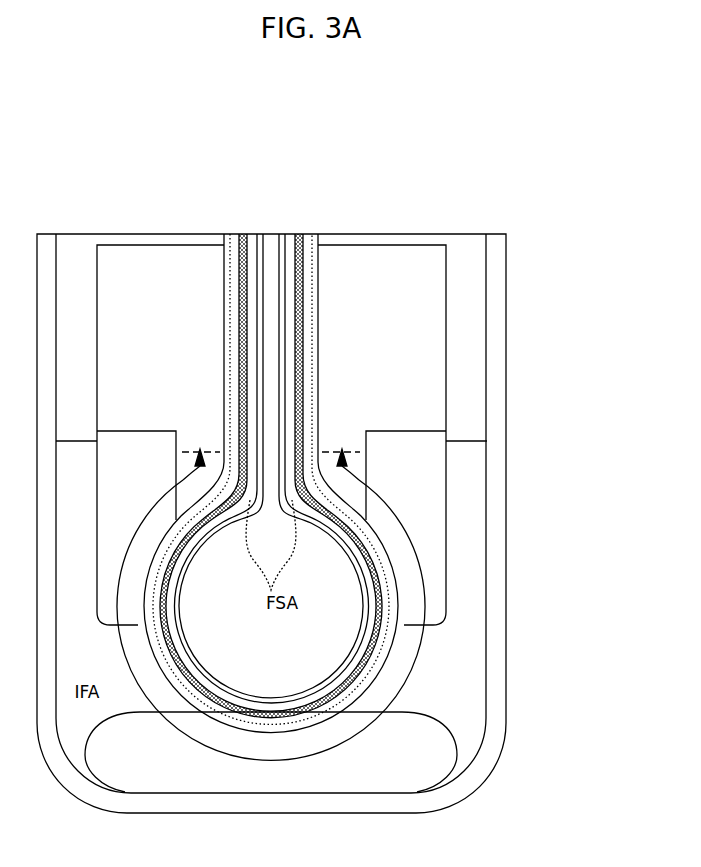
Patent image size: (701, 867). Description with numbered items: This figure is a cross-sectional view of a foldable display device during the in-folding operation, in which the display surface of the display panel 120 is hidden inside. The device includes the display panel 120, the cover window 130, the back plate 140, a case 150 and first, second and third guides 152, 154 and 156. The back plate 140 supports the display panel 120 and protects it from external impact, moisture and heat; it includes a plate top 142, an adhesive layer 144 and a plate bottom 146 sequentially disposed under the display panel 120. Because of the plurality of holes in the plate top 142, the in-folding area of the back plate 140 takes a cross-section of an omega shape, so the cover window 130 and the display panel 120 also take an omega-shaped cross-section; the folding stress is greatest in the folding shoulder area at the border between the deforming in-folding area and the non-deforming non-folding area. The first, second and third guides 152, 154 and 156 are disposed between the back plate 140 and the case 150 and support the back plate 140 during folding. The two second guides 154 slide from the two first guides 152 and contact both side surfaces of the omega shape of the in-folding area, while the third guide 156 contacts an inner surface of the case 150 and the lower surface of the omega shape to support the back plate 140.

The display panel 120 is at (290, 233).
The cover window 130 is at (280, 233).
The back plate 140 is at (275, 417).
The plate top 142 is at (292, 233).
The adhesive layer 144 is at (303, 233).
The plate bottom 146 is at (317, 233).
The case 150 is at (497, 304).
The first guide 152 is at (465, 389).
The second guide 154 is at (426, 520).
The third guide 156 is at (430, 760).